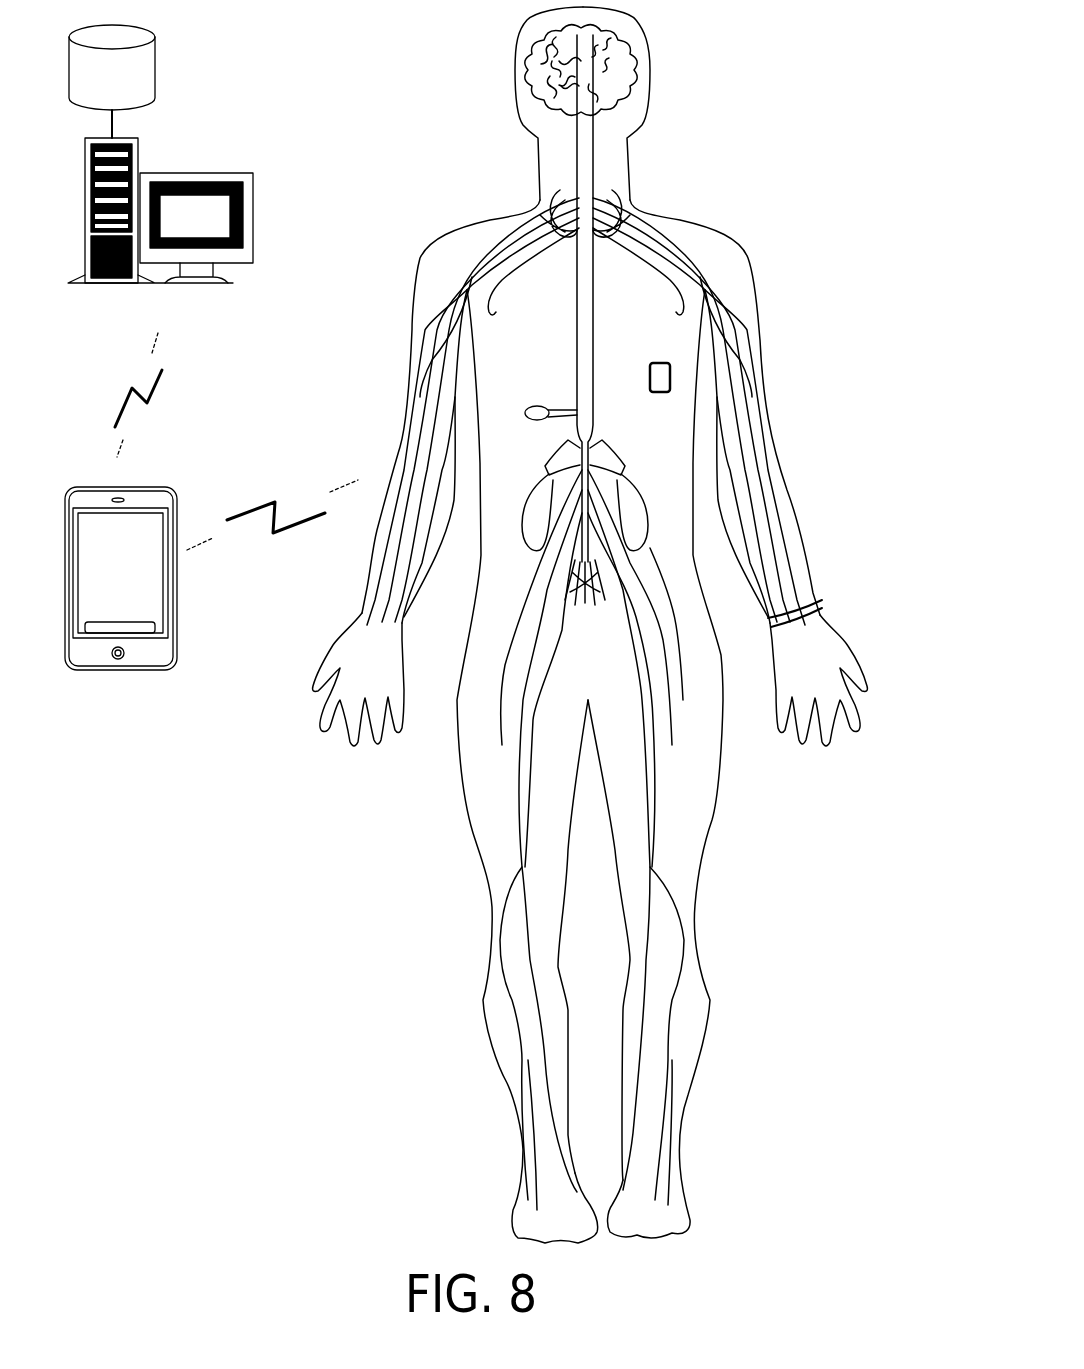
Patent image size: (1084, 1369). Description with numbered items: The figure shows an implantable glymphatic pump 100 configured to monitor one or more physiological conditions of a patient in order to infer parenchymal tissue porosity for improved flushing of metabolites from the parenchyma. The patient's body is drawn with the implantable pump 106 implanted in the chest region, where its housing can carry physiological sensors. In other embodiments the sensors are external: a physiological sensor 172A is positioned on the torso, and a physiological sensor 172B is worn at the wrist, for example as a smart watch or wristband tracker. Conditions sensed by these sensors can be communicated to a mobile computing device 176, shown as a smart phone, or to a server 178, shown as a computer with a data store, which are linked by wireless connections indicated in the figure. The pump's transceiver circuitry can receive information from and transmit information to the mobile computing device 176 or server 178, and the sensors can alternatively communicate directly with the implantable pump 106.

The implantable glymphatic pump 100 is at (763, 115).
The implantable pump 106 is at (527, 410).
The physiological sensor 172A is at (668, 367).
The physiological sensor 172B is at (822, 595).
The mobile computing device 176 is at (148, 502).
The server 178 is at (187, 173).